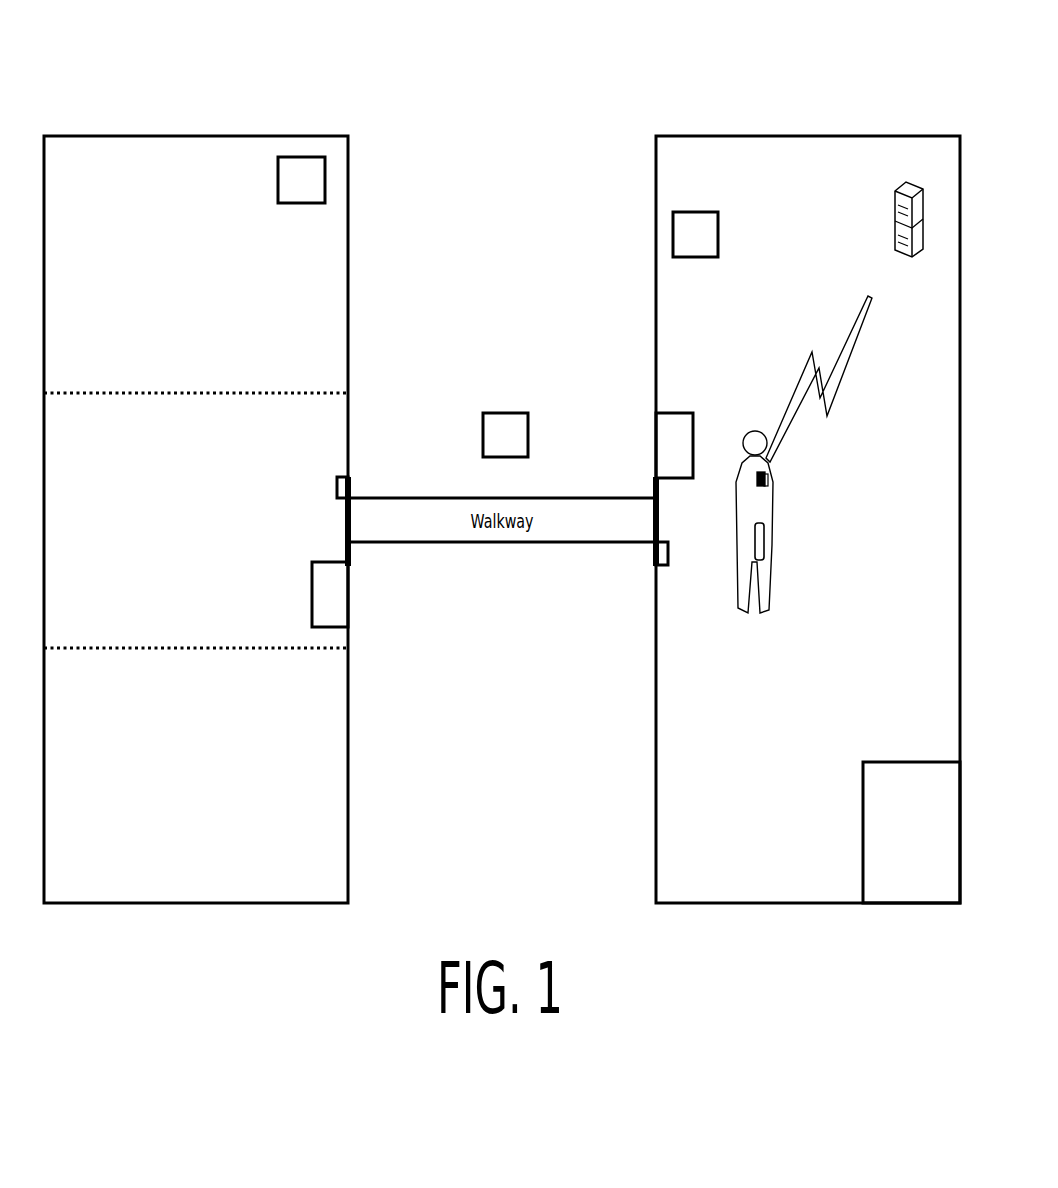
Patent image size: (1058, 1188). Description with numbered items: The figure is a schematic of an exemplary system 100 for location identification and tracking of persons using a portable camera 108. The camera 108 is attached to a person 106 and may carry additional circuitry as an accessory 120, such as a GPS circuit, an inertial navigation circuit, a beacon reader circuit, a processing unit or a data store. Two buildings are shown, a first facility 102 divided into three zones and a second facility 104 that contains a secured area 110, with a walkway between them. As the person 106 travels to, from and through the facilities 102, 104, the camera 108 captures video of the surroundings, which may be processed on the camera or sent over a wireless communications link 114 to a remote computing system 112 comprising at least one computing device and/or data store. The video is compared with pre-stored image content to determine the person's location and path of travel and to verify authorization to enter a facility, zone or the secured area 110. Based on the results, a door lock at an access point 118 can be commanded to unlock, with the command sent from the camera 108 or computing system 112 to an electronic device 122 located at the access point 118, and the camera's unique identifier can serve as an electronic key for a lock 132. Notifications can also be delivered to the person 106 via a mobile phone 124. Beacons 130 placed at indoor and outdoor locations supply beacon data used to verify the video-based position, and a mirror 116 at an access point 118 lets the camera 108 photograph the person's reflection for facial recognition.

The system 100 is at (138, 84).
The facility 102 is at (238, 170).
The facility 104 is at (848, 170).
The person 106 is at (757, 553).
The portable camera 108 is at (757, 478).
The secured area 110 is at (898, 878).
The computing system 112 is at (911, 266).
The wireless communications link 114 is at (810, 373).
The mirror 116 is at (662, 455).
The access point 118 is at (362, 478).
The accessory 120 is at (766, 490).
The electronic device 122 is at (317, 604).
The mobile phone 124 is at (764, 540).
The beacon 130 is at (288, 190).
The lock 132 is at (339, 480).